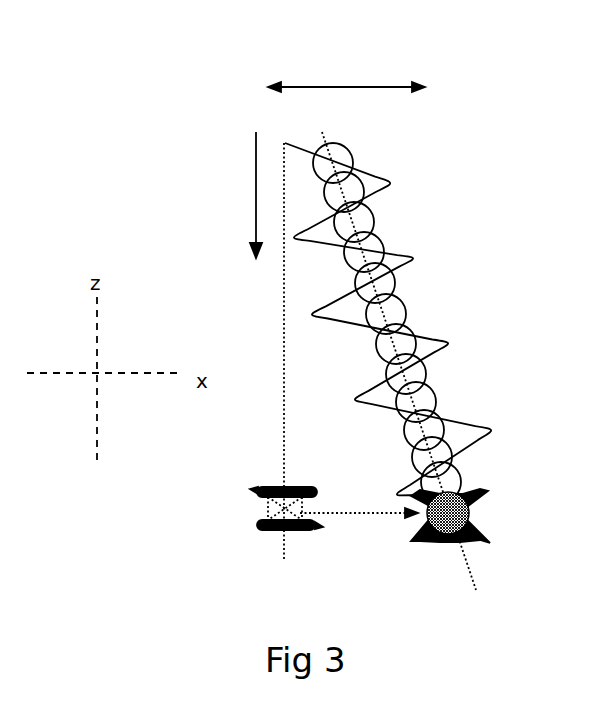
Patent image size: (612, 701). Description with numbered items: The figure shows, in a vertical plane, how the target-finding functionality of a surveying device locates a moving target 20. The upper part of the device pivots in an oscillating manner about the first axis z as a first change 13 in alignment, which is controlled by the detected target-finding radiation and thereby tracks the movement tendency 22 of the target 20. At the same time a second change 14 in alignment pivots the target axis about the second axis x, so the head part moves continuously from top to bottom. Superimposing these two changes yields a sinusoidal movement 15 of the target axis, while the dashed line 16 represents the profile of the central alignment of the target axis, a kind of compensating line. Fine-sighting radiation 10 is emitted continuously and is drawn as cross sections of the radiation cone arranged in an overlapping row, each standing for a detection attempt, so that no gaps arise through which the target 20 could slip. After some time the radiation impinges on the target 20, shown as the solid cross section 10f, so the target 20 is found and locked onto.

The first change in alignment 13 is at (347, 87).
The dashed line 16 is at (327, 132).
The second change in alignment 14 is at (256, 185).
The fine-sighting radiation 10 is at (353, 185).
The sinusoidal movement 15 is at (400, 367).
The target 20 is at (290, 533).
The solid cross section 10f is at (470, 497).
The movement tendency 22 is at (357, 513).